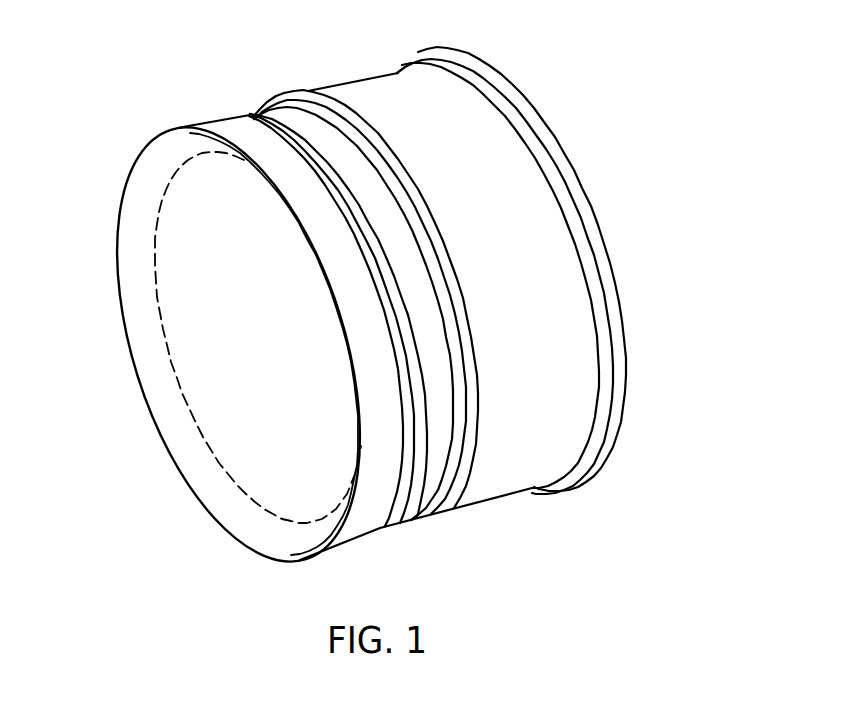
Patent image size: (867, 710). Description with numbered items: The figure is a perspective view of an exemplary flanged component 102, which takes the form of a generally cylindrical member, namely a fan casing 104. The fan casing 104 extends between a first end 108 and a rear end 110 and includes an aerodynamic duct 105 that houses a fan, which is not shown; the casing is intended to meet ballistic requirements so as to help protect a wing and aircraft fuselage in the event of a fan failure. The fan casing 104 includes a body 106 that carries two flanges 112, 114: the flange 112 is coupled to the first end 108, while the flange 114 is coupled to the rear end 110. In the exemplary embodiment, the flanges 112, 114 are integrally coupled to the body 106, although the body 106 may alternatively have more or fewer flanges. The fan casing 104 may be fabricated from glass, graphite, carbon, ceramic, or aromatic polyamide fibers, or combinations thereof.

The flanged component 102 is at (660, 61).
The fan casing 104 is at (275, 562).
The aerodynamic duct 105 is at (290, 333).
The body 106 is at (485, 152).
The first end 108 is at (149, 303).
The rear end 110 is at (628, 310).
The flange 112 is at (172, 125).
The flange 114 is at (588, 468).